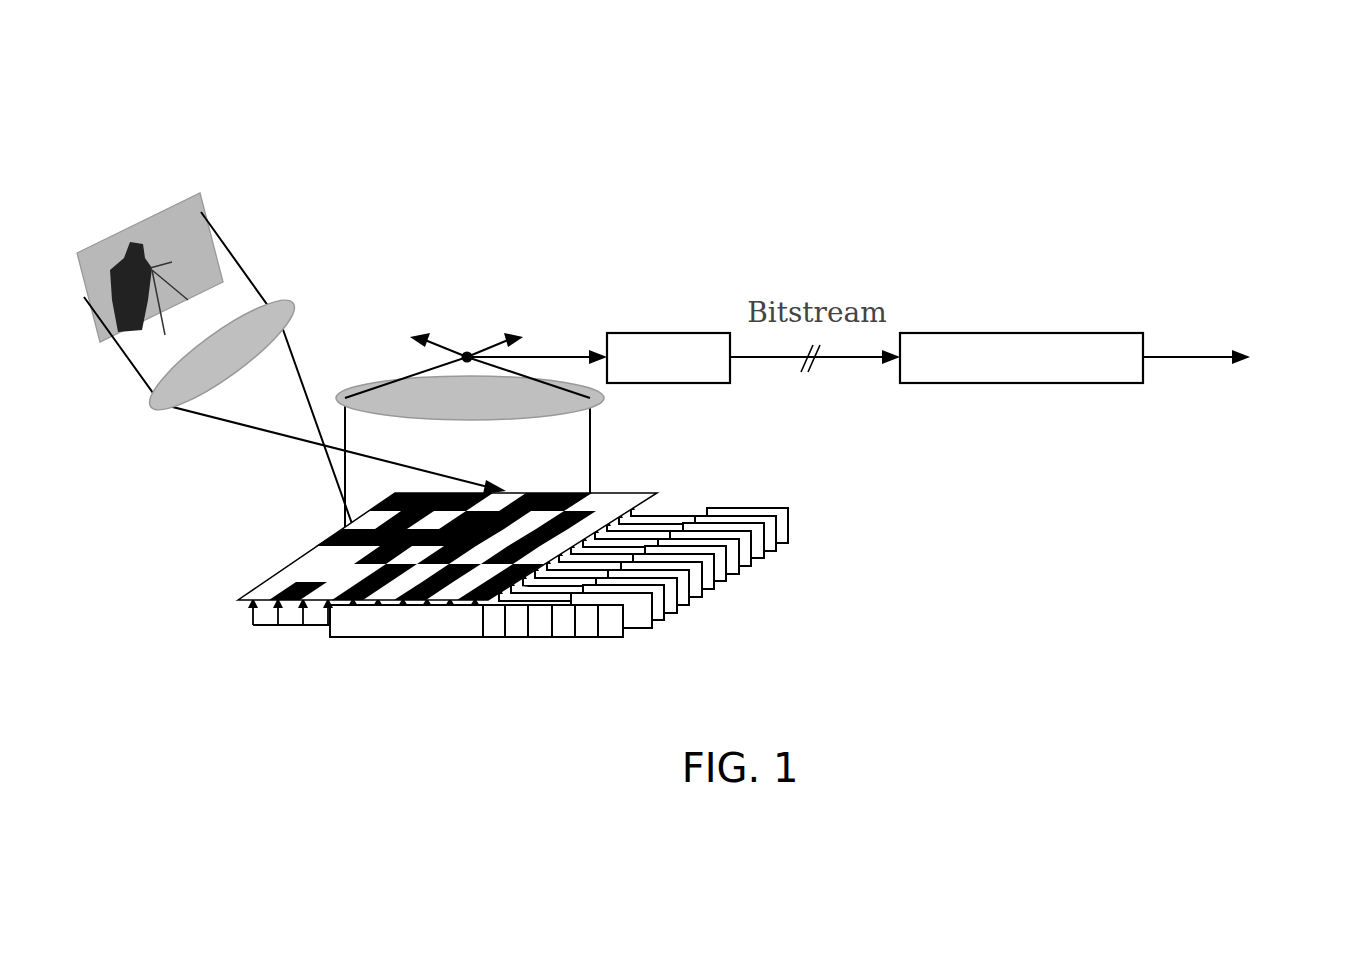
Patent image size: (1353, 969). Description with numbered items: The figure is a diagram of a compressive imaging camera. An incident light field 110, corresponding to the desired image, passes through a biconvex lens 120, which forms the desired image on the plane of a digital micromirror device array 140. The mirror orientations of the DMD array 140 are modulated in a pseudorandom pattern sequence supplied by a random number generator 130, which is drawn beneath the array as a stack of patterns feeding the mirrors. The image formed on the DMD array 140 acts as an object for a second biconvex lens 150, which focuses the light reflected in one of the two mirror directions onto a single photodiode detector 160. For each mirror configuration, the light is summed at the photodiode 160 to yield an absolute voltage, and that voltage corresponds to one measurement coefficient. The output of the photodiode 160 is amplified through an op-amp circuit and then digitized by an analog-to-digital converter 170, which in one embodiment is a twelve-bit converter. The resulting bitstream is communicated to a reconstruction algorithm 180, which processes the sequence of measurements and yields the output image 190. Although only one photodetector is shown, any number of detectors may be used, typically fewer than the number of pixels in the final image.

The incident light field 110 is at (183, 221).
The lens 120 is at (293, 307).
The random number generator 130 is at (457, 628).
The digital micromirror device array 140 is at (327, 550).
The second biconvex lens 150 is at (333, 390).
The photodiode detector 160 is at (467, 352).
The analog-to-digital converter 170 is at (627, 343).
The reconstruction algorithm 180 is at (958, 345).
The output image 190 is at (1280, 343).